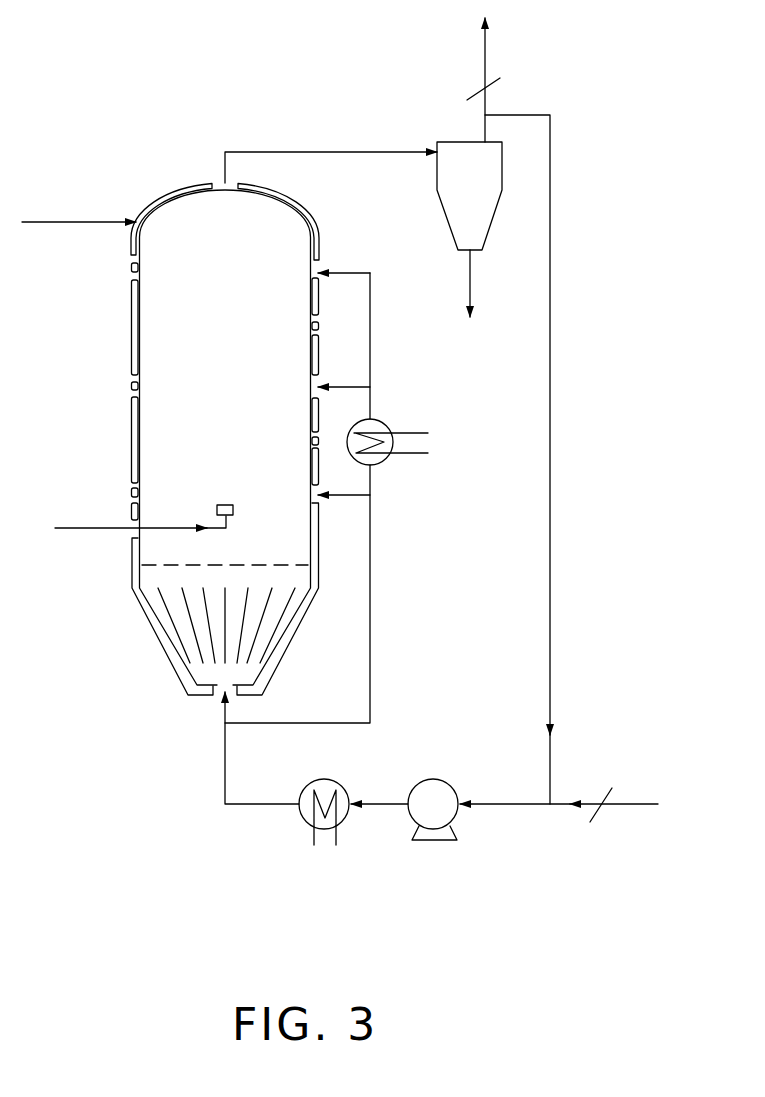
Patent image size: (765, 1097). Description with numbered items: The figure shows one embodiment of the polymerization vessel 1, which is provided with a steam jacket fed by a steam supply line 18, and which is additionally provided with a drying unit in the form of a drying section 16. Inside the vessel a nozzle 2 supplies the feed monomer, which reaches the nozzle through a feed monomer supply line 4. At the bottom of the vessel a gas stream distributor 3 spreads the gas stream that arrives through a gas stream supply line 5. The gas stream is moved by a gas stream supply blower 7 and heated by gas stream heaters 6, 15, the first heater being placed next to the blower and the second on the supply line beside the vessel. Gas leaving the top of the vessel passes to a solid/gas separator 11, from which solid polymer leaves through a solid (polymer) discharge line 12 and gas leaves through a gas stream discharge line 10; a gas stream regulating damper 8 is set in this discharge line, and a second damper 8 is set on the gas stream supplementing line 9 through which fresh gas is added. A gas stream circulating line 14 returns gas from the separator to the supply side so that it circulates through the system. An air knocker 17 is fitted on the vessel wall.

The polymerization vessel 1 is at (180, 440).
The nozzle 2 is at (225, 503).
The gas stream distributor 3 is at (176, 625).
The feed monomer supply line 4 is at (84, 530).
The gas stream supply line 5 is at (372, 560).
The gas stream heater 6 is at (336, 786).
The gas stream supply blower 7 is at (446, 784).
The gas stream regulating damper 8 is at (500, 92).
The gas stream supplementing line 9 is at (635, 806).
The gas stream discharge line 10 is at (482, 56).
The solid/gas separator 11 is at (441, 200).
The solid (polymer) discharge line 12 is at (468, 287).
The gas stream circulating line 14 is at (552, 392).
The gas stream heater 15 is at (383, 426).
The drying section 16 is at (156, 316).
The air knocker 17 is at (129, 268).
The steam supply line 18 is at (62, 220).